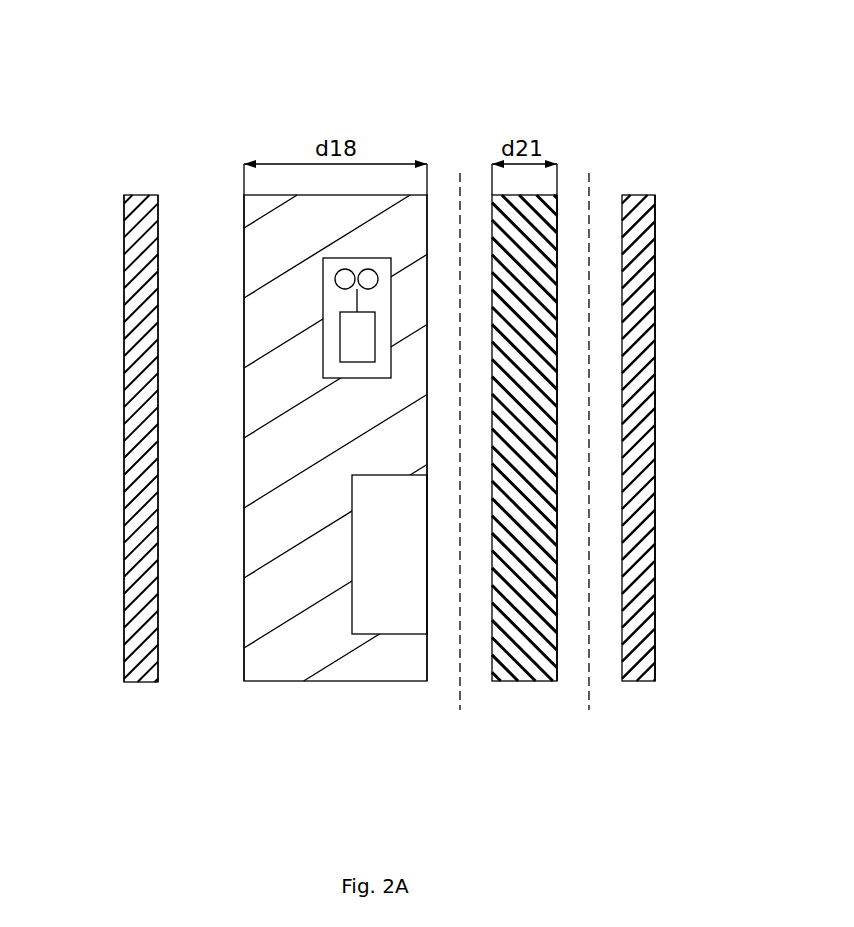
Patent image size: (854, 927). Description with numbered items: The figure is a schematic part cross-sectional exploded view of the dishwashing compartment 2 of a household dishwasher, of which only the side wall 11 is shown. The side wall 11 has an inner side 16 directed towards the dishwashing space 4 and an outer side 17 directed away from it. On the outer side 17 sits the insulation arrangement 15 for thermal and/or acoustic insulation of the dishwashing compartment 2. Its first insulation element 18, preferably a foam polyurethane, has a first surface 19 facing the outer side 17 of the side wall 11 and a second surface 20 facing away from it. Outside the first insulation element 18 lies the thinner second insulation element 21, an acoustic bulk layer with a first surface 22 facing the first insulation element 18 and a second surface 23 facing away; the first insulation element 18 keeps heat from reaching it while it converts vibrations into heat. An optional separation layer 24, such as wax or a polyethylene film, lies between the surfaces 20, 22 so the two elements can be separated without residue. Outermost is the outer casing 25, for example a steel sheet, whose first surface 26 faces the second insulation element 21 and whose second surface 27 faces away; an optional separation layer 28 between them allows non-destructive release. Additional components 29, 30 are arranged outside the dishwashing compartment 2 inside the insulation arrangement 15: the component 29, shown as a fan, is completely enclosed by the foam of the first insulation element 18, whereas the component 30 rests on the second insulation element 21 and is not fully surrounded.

The dishwashing compartment 2 is at (420, 73).
The dishwashing space 4 is at (72, 452).
The side wall 11 is at (117, 644).
The insulation arrangement 15 is at (510, 765).
The inner side 16 is at (124, 268).
The outer side 17 is at (158, 215).
The first insulation element 18 is at (256, 482).
The first surface 19 is at (244, 655).
The second surface 20 is at (427, 416).
The second insulation element 21 is at (517, 690).
The first surface 22 is at (557, 300).
The second surface 23 is at (557, 350).
The separation layer 24 is at (460, 710).
The outer casing 25 is at (637, 690).
The first surface 26 is at (655, 553).
The second surface 27 is at (655, 517).
The separation layer 28 is at (589, 710).
The component 29 is at (323, 352).
The component 30 is at (352, 632).